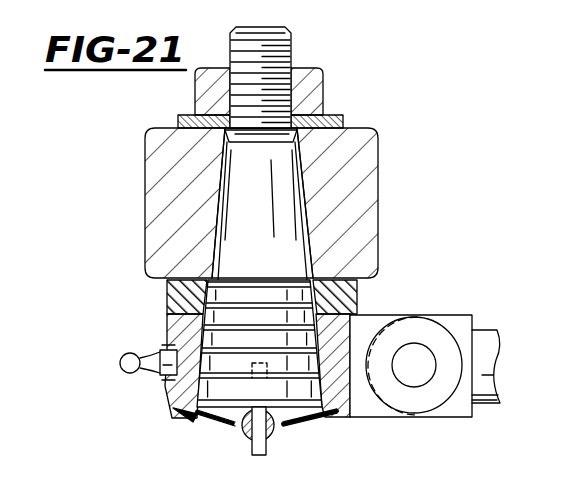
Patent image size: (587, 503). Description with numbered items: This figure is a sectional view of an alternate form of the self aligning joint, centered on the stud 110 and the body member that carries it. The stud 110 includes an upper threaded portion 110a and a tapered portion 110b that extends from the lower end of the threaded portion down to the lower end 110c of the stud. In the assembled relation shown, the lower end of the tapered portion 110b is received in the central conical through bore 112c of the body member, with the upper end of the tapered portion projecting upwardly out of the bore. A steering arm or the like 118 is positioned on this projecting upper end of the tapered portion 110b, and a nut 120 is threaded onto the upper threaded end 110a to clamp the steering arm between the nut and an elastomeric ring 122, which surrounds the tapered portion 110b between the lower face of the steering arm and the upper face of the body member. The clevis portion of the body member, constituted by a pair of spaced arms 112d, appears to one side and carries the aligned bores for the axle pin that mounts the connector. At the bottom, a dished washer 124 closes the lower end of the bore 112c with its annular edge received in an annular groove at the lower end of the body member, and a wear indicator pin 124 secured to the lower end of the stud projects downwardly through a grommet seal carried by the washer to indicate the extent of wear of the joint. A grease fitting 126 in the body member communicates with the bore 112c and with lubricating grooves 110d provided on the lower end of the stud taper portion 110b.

The stud 110 is at (205, 187).
The upper threaded portion 110a is at (291, 53).
The tapered portion 110b is at (214, 240).
The lower end 110c is at (307, 420).
The lubricating grooves 110d is at (282, 355).
The central conical through bore 112c is at (345, 330).
The spaced arms 112d is at (457, 315).
The steering arm 118 is at (377, 160).
The nut 120 is at (323, 100).
The elastomeric ring 122 is at (165, 293).
The dished washer 124 is at (213, 428).
The grease fitting 126 is at (120, 372).